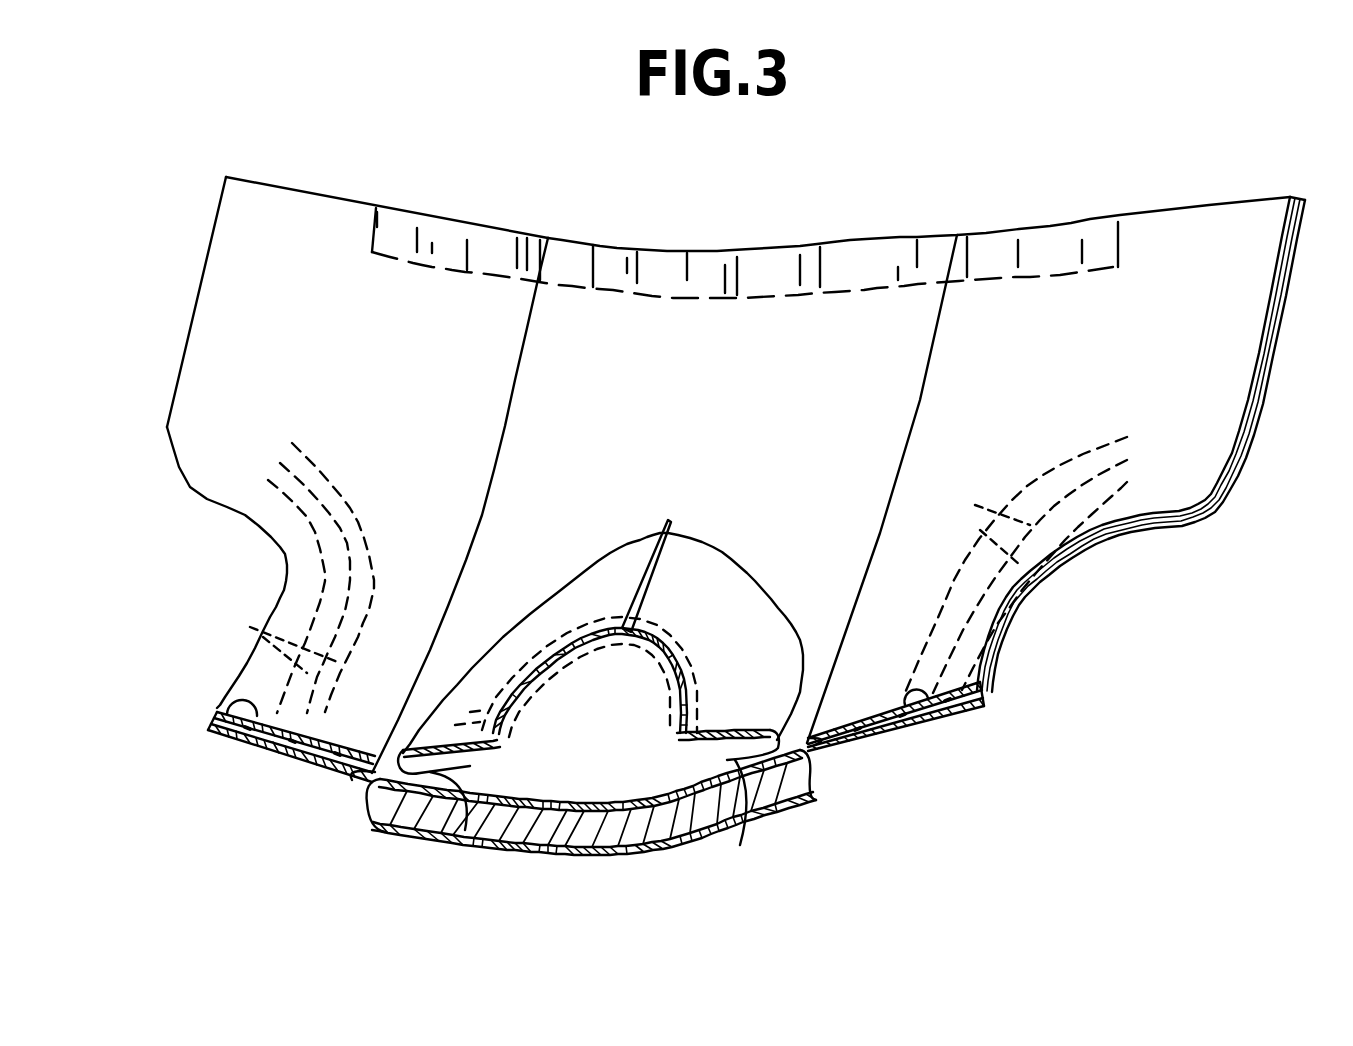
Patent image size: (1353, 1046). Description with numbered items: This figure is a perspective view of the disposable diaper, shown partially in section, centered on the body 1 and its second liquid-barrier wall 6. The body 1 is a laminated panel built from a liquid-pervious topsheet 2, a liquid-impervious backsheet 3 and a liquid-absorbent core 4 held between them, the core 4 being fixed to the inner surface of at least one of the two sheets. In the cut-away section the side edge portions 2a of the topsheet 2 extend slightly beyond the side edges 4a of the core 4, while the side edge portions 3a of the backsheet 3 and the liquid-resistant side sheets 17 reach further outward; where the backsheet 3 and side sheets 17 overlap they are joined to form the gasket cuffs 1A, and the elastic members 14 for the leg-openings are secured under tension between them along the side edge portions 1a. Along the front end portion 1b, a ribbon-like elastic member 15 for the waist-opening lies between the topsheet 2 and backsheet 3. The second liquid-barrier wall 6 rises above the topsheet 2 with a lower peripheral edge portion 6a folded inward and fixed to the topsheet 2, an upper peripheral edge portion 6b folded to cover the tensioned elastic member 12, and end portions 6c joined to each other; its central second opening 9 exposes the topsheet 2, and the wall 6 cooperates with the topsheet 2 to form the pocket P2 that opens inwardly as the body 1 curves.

The body 1 is at (1100, 183).
The side edge portion 1a is at (1257, 252).
The front end portion 1b is at (345, 214).
The gasket cuff 1A is at (213, 706).
The topsheet 2 is at (580, 800).
The side edge portion of topsheet 2a is at (350, 785).
The backsheet 3 is at (614, 858).
The side edge portion of backsheet 3a is at (222, 740).
The core 4 is at (585, 850).
The side edge of core 4a is at (398, 808).
The second liquid-barrier wall 6 is at (723, 760).
The lower peripheral edge portion 6a is at (510, 640).
The upper peripheral edge portion 6b is at (543, 683).
The longitudinally opposite end portion 6c is at (648, 548).
The second opening 9 is at (601, 658).
The elastic member 12 is at (505, 751).
The elastic member for leg-opening 14 is at (290, 657).
The elastic member for waist-opening 15 is at (611, 248).
The side sheet 17 is at (236, 690).
The pocket P2 is at (435, 765).